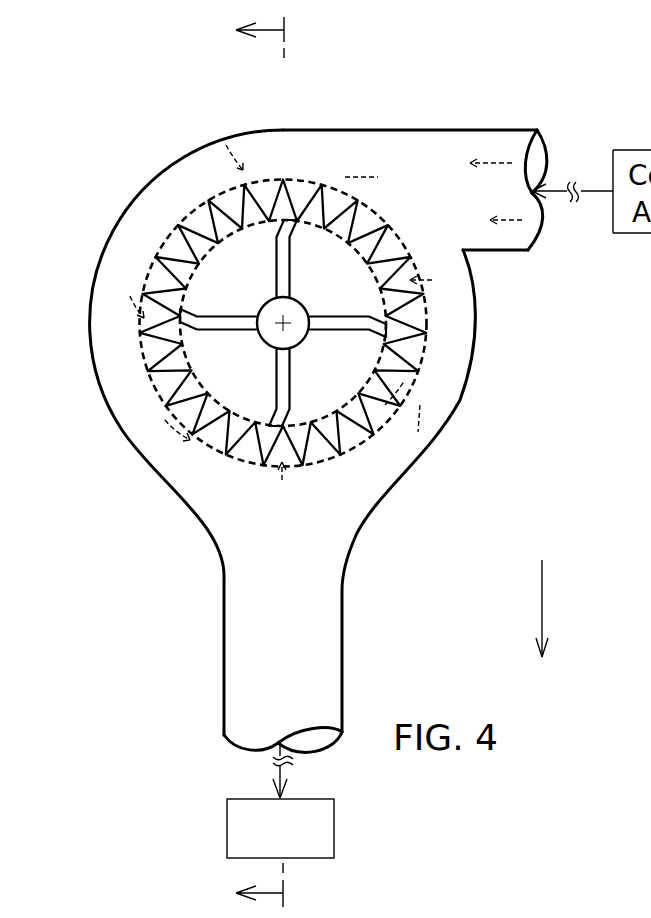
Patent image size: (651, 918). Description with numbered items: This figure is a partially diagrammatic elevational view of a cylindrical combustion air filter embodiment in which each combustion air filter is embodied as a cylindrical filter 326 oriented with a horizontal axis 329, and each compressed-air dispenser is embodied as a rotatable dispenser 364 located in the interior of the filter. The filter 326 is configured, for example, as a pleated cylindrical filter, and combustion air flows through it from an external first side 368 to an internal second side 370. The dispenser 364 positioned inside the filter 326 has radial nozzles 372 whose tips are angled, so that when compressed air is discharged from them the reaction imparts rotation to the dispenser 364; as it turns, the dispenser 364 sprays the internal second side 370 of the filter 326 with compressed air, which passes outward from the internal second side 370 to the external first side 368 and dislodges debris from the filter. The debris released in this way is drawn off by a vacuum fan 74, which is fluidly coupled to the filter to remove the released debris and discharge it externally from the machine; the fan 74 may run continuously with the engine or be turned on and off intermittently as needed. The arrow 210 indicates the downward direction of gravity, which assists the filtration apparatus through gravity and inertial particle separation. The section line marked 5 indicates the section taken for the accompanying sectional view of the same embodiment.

The cylindrical filter 326 is at (347, 160).
The dispenser 364 is at (240, 280).
The external first side 368 is at (342, 455).
The internal second side 370 is at (378, 362).
The radial nozzles 372 is at (277, 393).
The horizontal axis 329 is at (288, 321).
The arrow 210 is at (542, 605).
The vacuum fan 74 is at (334, 840).
The section line 5- 5 is at (277, 463).